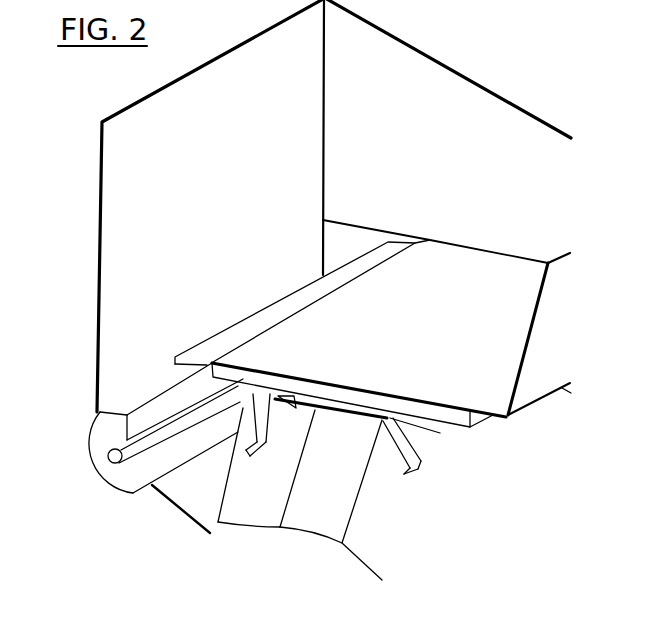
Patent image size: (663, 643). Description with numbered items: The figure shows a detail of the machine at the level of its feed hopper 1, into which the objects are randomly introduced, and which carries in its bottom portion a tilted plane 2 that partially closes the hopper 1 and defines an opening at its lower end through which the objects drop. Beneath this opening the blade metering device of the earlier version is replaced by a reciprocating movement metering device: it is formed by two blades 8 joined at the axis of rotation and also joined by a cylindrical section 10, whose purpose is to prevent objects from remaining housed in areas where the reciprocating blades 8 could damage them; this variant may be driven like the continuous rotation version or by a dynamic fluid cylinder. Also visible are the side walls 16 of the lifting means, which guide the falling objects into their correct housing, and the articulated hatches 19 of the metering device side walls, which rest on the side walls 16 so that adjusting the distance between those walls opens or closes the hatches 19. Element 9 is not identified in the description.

The hopper 1 is at (188, 215).
The tilted plane 2 is at (237, 325).
The blades 8 is at (165, 458).
The pipe 9 is at (110, 460).
The cylindrical section 10 is at (152, 393).
The side walls 16 is at (323, 503).
The articulated hatches 19 is at (265, 493).